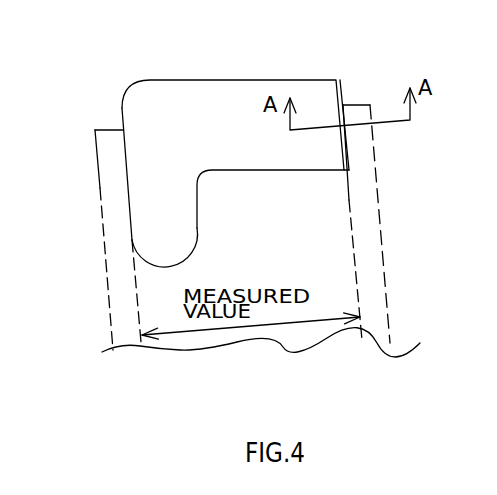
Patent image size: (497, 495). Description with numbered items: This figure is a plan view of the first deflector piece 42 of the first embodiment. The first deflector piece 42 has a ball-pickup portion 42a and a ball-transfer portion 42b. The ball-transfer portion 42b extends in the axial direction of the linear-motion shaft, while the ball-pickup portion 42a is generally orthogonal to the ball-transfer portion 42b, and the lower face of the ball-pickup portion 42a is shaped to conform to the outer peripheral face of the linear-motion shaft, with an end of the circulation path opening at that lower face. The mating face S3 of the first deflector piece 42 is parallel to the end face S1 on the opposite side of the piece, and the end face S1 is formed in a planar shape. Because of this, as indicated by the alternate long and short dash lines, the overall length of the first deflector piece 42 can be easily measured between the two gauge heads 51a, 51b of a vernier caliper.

The first deflector piece 42 is at (253, 95).
The ball-pickup portion 42a is at (180, 232).
The ball-transfer portion 42b is at (277, 162).
The gauge head 51a is at (380, 210).
The gauge head 51b is at (122, 282).
The end face S1 is at (128, 185).
The mating face S3 is at (345, 96).